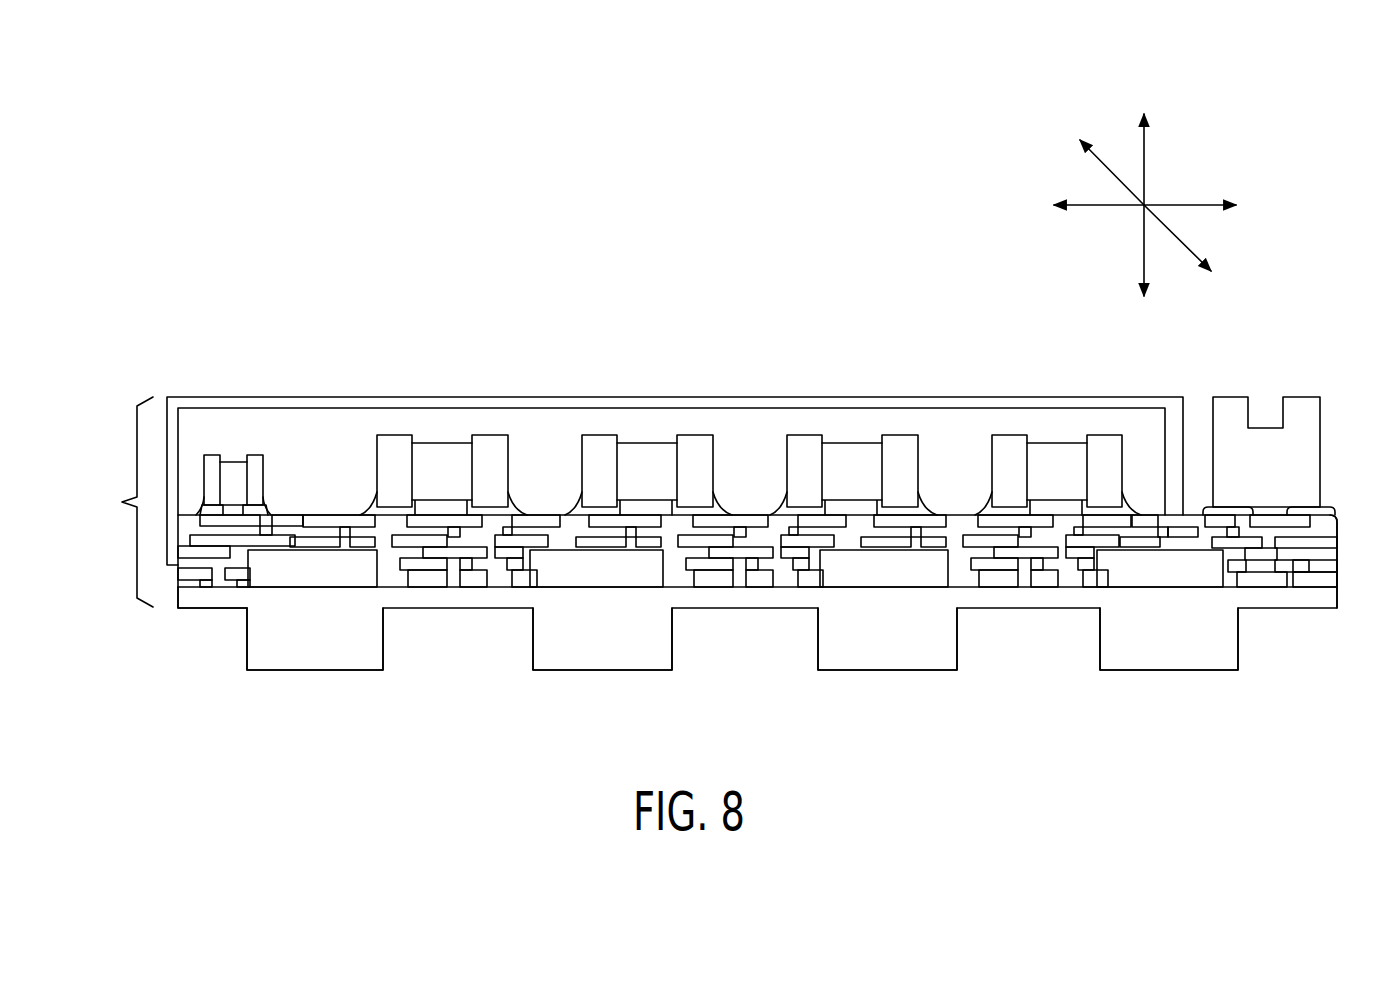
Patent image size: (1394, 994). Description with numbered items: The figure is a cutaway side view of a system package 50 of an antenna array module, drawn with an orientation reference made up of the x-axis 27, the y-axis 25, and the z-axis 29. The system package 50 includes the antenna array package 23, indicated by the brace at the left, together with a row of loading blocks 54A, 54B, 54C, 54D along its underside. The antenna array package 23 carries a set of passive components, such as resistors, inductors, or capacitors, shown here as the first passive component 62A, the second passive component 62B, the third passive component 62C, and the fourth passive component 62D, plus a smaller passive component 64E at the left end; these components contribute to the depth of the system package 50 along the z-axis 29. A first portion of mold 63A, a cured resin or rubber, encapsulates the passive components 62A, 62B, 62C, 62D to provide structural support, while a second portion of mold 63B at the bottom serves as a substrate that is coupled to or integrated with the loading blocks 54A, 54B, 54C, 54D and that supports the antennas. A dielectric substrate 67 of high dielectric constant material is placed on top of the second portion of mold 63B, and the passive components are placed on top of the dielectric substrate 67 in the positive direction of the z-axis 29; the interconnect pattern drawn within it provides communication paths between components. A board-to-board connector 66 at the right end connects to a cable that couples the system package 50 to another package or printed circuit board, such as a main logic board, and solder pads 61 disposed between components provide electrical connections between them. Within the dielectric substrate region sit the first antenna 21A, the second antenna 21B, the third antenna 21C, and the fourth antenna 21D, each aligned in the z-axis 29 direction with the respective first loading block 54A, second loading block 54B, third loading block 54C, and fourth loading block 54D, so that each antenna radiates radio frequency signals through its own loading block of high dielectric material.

The system package 50 is at (251, 360).
The antenna array package 23 is at (121, 502).
The first portion of mold 63A is at (318, 468).
The second portion of mold 63B is at (195, 600).
The first passive component 62A is at (448, 463).
The second passive component 62B is at (653, 463).
The third passive component 62C is at (858, 463).
The fourth passive component 62D is at (1062, 465).
The passive component 64E is at (232, 470).
The board-to-board connector 66 is at (1265, 448).
The solder pads 61 is at (1323, 507).
The dielectric substrate 67 is at (237, 547).
The first antenna 21A is at (347, 573).
The second antenna 21B is at (632, 573).
The third antenna 21C is at (917, 573).
The fourth antenna 21D is at (1200, 573).
The first loading block 54A is at (308, 648).
The second loading block 54B is at (613, 647).
The third loading block 54C is at (883, 647).
The fourth loading block 54D is at (1160, 647).
The y-axis 25 is at (1008, 188).
The x-axis 27 is at (1148, 75).
The z-axis 29 is at (1065, 102).